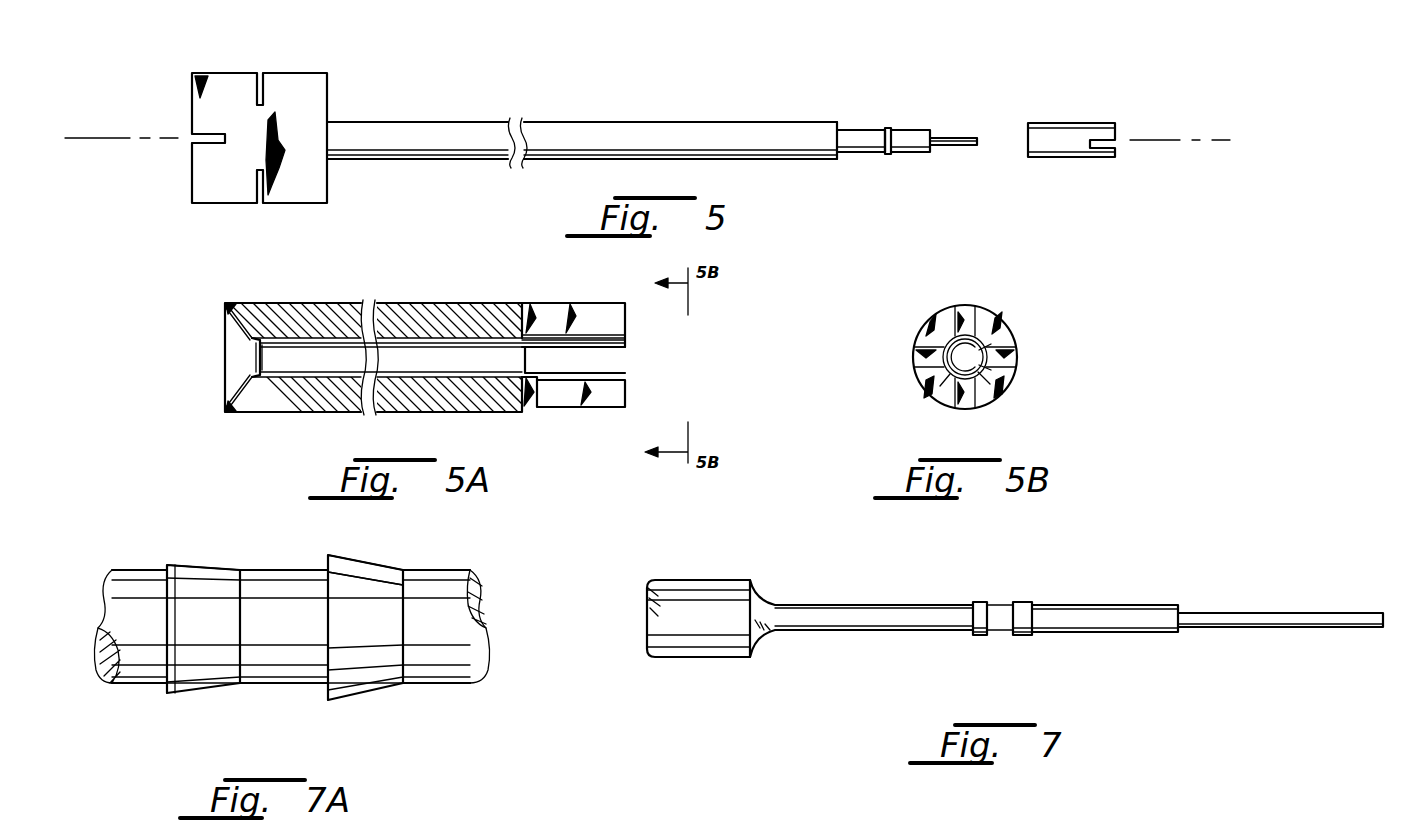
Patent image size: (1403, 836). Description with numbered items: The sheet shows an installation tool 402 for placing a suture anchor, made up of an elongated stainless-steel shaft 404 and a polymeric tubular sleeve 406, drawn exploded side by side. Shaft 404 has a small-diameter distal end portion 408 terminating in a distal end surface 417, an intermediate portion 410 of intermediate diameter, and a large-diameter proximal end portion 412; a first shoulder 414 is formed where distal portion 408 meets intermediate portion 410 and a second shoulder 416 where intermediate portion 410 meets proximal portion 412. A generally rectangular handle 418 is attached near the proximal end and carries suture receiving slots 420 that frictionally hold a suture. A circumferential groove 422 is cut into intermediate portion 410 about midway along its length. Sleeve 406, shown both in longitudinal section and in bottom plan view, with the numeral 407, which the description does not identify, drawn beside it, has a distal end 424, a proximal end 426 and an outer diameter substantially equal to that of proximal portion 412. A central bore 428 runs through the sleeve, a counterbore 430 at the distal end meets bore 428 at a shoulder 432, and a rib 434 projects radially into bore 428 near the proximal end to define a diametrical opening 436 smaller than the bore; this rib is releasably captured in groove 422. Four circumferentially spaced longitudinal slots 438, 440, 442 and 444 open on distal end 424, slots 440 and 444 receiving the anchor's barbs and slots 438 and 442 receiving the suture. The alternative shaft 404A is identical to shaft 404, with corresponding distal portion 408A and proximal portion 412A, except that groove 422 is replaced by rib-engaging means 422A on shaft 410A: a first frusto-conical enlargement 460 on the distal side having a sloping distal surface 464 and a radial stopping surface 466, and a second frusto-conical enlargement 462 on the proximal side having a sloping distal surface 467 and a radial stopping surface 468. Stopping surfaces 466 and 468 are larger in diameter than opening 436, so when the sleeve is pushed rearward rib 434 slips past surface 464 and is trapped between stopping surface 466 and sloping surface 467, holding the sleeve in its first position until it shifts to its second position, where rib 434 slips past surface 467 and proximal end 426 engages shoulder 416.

In FIG. 5, the installation tool 402 is at (852, 163).
In FIG. 5, the elongated shaft 404 is at (740, 120).
In FIG. 7A, the alternative shaft 404A is at (90, 624).
In FIG. 7, the alternative shaft 404A is at (1105, 604).
In FIG. 5, the tubular sleeve 406 is at (1058, 120).
In FIG. 5A, the tubular sleeve 406 is at (417, 414).
In FIG. 5B, the tubular sleeve 406 is at (994, 308).
In FIG. 5, the axis 407 is at (1172, 138).
In FIG. 5, the distal end portion 408 is at (951, 136).
In FIG. 7, the pin 408A is at (1340, 612).
In FIG. 5, the intermediate portion 410 is at (857, 128).
In FIG. 7A, the shaft 410A is at (146, 684).
In FIG. 7, the shaft 410A is at (863, 620).
In FIG. 5, the proximal end portion 412 is at (590, 120).
In FIG. 7, the shaft tube 412A is at (702, 596).
In FIG. 5, the first shoulder 414 is at (933, 128).
In FIG. 5, the second shoulder 416 is at (843, 125).
In FIG. 5, the distal end surface 417 is at (978, 145).
In FIG. 5, the handle 418 is at (312, 200).
In FIG. 5, the suture receiving slots 420 is at (259, 80).
In FIG. 5, the circumferential groove 422 is at (889, 158).
In FIG. 7A, the rib-engaging means 422A is at (302, 560).
In FIG. 7, the rib-engaging means 422A is at (1000, 594).
In FIG. 5A, the distal end 424 is at (626, 376).
In FIG. 5A, the proximal end 426 is at (226, 352).
In FIG. 5A, the central bore 428 is at (412, 344).
In FIG. 5B, the central bore 428 is at (985, 340).
In FIG. 5A, the counterbore 430 is at (548, 344).
In FIG. 5B, the counterbore 430 is at (948, 378).
In FIG. 5A, the shoulder 432 is at (532, 386).
In FIG. 5B, the shoulder 432 is at (955, 402).
In FIG. 5A, the rib 434 is at (264, 338).
In FIG. 5B, the rib 434 is at (1008, 350).
In FIG. 5A, the diametrical opening 436 is at (265, 354).
In FIG. 5B, the diametrical opening 436 is at (990, 380).
In FIG. 5B, the slot 438 is at (914, 360).
In FIG. 5A, the slot 440 is at (583, 316).
In FIG. 5B, the slot 440 is at (965, 312).
In FIG. 5A, the slot 442 is at (608, 354).
In FIG. 5B, the slot 442 is at (1018, 362).
In FIG. 5A, the slot 444 is at (604, 408).
In FIG. 5B, the slot 444 is at (970, 400).
In FIG. 7A, the first frusto-conical enlargement 460 is at (365, 552).
In FIG. 7, the first frusto-conical enlargement 460 is at (1024, 638).
In FIG. 7A, the second frusto-conical enlargement 462 is at (193, 562).
In FIG. 7, the second frusto-conical enlargement 462 is at (982, 638).
In FIG. 7A, the sloping distal surface 464 is at (386, 566).
In FIG. 7A, the radial stopping surface 466 is at (320, 558).
In FIG. 7A, the sloping distal surface 467 is at (206, 566).
In FIG. 7A, the radial stopping surface 468 is at (167, 566).